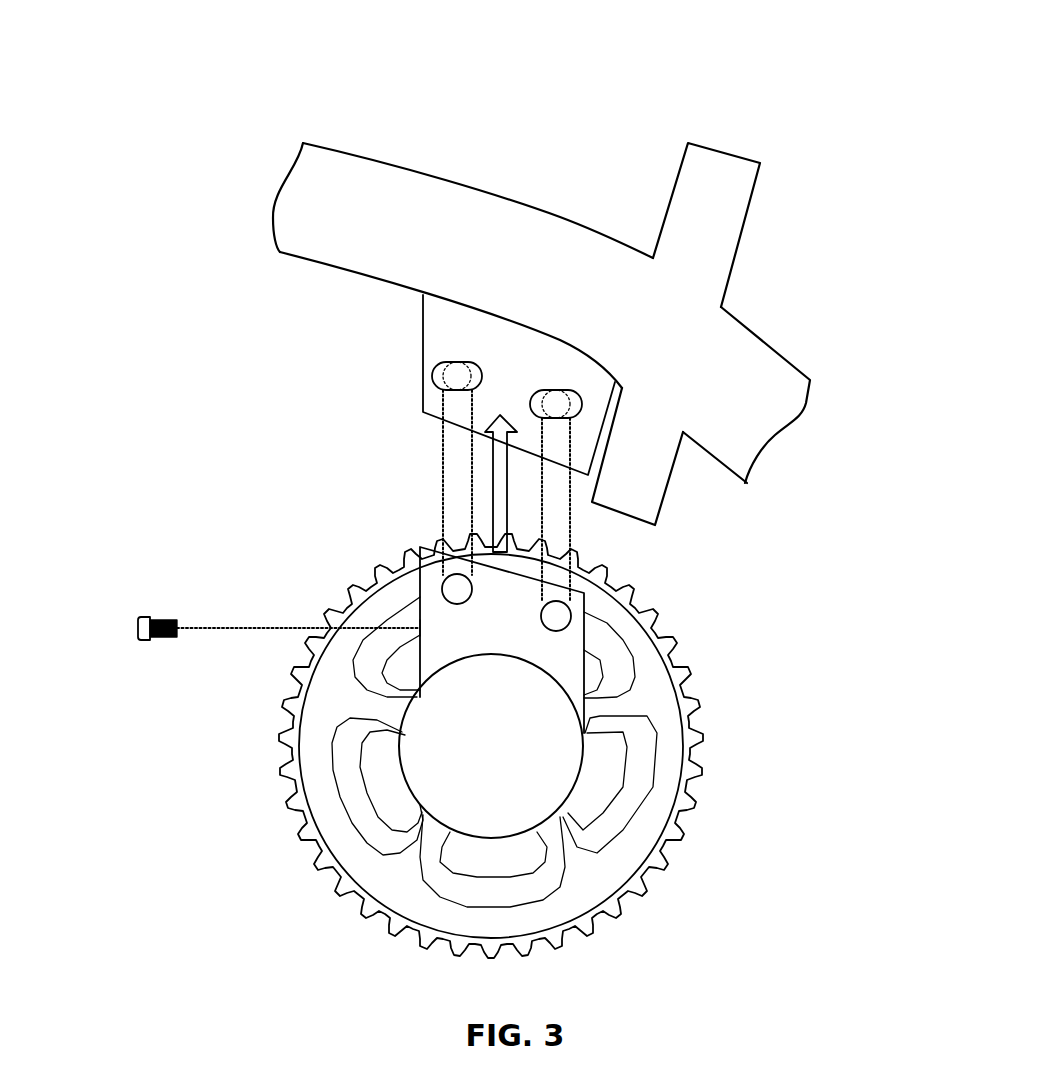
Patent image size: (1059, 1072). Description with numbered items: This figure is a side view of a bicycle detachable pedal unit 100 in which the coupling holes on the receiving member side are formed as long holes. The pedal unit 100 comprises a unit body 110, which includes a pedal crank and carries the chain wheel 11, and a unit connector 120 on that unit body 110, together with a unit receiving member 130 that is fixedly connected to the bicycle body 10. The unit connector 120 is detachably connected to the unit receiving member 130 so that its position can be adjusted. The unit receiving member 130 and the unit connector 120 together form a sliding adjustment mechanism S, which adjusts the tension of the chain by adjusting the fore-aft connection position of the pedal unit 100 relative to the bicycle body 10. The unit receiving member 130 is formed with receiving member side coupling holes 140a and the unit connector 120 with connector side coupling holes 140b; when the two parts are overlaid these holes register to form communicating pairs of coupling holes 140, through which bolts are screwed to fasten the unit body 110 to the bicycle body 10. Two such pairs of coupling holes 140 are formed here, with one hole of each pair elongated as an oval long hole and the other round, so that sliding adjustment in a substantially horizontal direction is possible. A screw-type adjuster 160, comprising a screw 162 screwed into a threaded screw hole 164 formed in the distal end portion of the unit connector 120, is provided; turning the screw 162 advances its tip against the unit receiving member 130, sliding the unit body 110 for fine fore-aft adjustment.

The bicycle body 10 is at (458, 198).
The sliding adjustment mechanism S is at (505, 360).
The bicycle detachable pedal unit 100 is at (478, 514).
The unit receiving member 130 is at (522, 418).
The receiving member side coupling holes 140a is at (432, 372).
The pairs of coupling holes 140 is at (453, 443).
The connector side coupling holes 140b is at (443, 582).
The unit connector 120 is at (548, 633).
The unit body 110 is at (555, 716).
The chain wheel 11 is at (544, 746).
The screw-type adjuster 160 is at (258, 658).
The screw 162 is at (157, 618).
The threaded screw hole 164 is at (415, 628).